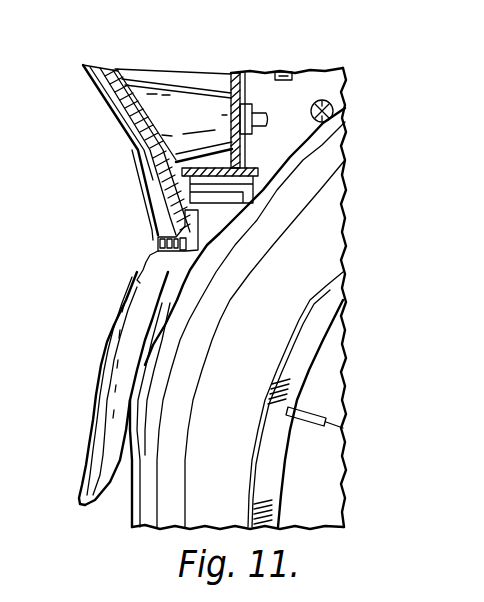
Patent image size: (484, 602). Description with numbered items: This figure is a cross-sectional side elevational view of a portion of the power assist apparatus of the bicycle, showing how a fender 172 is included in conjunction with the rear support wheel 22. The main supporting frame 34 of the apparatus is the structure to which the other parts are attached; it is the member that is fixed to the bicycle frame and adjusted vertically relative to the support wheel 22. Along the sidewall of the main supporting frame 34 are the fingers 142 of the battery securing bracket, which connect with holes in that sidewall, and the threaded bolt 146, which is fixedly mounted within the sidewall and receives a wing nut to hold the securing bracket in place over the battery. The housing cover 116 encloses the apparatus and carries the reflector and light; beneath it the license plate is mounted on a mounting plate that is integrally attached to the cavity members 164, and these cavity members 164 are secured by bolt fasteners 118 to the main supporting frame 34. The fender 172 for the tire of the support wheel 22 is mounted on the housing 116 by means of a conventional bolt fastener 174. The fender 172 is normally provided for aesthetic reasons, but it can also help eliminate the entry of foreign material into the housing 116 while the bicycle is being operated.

The rear support wheel 22 is at (325, 242).
The main supporting frame 34 is at (328, 87).
The housing cover 116 is at (140, 127).
The bolt fasteners 118 is at (257, 110).
The fingers 142 is at (291, 73).
The threaded bolt 146 is at (333, 105).
The cavity members 164 is at (185, 97).
The fender 172 is at (104, 354).
The bolt fastener 174 is at (157, 242).